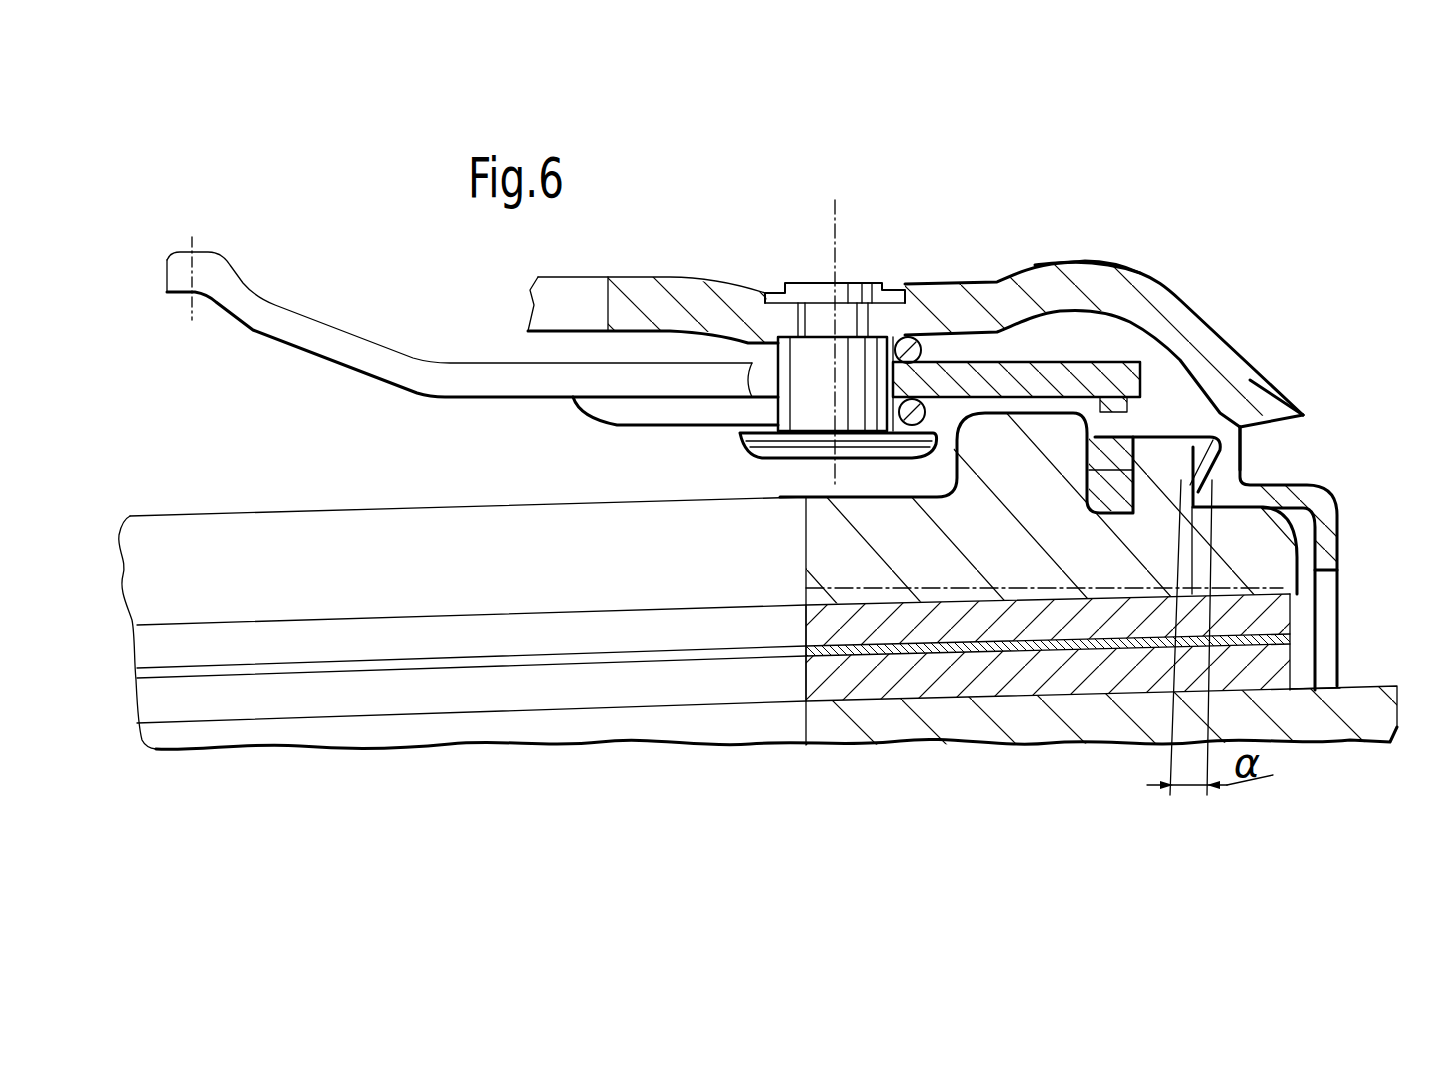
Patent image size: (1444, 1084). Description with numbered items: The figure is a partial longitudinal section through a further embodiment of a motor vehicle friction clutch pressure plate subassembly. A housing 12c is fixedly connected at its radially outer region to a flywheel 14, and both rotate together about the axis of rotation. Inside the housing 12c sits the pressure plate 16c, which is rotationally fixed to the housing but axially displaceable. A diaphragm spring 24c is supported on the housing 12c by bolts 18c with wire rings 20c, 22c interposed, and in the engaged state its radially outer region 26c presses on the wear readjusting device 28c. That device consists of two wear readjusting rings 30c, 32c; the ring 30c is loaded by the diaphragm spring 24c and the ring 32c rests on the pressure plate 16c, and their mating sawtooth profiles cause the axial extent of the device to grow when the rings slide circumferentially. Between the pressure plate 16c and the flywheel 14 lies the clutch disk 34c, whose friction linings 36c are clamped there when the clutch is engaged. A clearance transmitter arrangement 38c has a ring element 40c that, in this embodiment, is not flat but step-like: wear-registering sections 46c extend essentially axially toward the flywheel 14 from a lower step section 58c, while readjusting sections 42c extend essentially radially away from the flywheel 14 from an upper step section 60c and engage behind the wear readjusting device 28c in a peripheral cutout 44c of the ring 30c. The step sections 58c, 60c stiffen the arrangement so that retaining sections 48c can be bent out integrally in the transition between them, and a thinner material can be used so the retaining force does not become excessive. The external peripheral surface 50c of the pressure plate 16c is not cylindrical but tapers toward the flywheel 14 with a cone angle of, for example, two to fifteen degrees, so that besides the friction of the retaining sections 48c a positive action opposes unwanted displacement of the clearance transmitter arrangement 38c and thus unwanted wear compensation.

The housing 12c is at (1042, 265).
The flywheel 14 is at (1375, 686).
The pressure plate 16c is at (318, 515).
The bolts 18c is at (836, 283).
The wire ring 20c is at (903, 338).
The wire ring 22c is at (960, 283).
The diaphragm spring 24c is at (370, 340).
The radially outer region 26c is at (1118, 290).
The wear readjusting device 28c is at (1070, 460).
The wear readjusting ring 30c is at (1077, 540).
The wear readjusting ring 32c is at (1135, 610).
The clutch disk 34c is at (565, 665).
The friction linings 36c is at (858, 620).
The clearance transmitter arrangement 38c is at (1270, 409).
The ring element 40c is at (1272, 490).
The readjusting sections 42c is at (1145, 380).
The peripheral cutout 44c is at (1118, 398).
The wear-registering sections 46c is at (1340, 570).
The retaining sections 48c is at (1325, 690).
The external peripheral surface 50c is at (1180, 432).
The lower step section 58c is at (1348, 493).
The upper step section 60c is at (1245, 428).